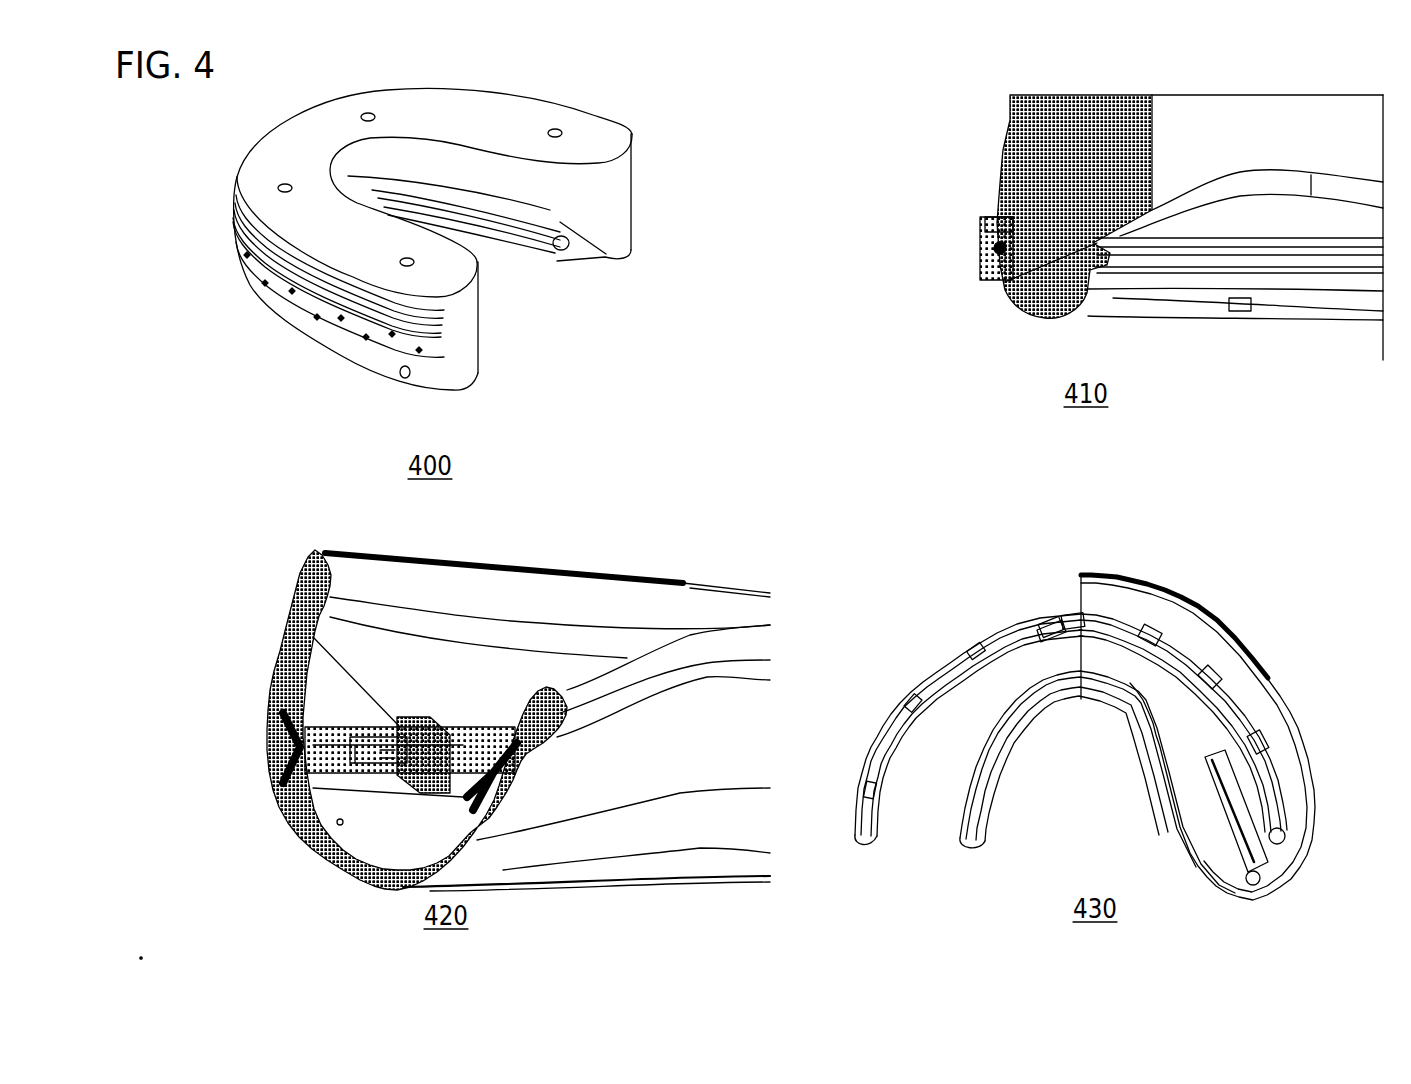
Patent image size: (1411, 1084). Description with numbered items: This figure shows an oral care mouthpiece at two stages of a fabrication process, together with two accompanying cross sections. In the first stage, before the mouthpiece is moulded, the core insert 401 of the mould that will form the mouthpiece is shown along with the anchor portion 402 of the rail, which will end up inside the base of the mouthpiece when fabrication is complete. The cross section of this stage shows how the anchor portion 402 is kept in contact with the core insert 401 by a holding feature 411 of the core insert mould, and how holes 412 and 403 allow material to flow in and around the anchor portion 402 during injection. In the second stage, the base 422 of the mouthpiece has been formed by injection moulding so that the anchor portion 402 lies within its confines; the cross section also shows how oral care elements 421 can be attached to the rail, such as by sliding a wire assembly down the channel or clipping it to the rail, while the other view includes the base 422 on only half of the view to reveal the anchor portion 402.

The core insert 401 is at (503, 120).
The anchor portion 402 is at (378, 372).
The hole 403 is at (310, 341).
The holding feature 411 is at (1005, 282).
The hole 412 is at (994, 226).
The oral care elements 421 is at (290, 618).
The base 422 is at (272, 683).